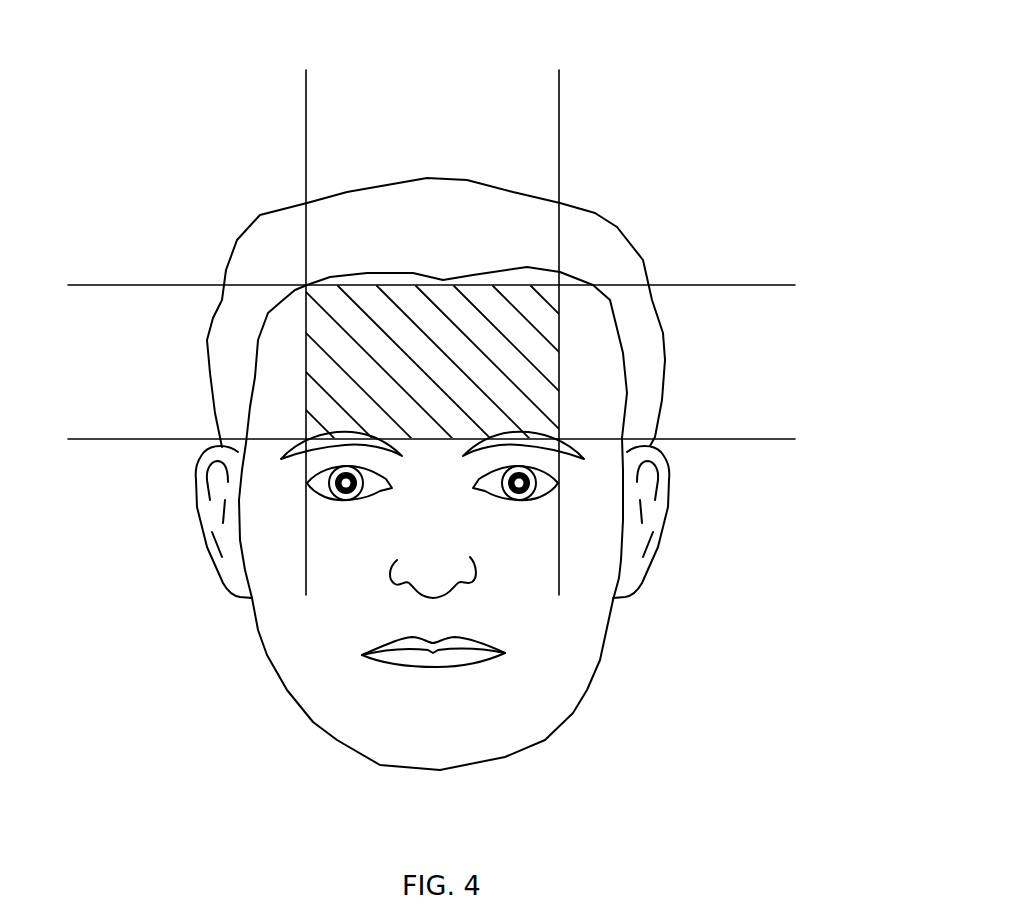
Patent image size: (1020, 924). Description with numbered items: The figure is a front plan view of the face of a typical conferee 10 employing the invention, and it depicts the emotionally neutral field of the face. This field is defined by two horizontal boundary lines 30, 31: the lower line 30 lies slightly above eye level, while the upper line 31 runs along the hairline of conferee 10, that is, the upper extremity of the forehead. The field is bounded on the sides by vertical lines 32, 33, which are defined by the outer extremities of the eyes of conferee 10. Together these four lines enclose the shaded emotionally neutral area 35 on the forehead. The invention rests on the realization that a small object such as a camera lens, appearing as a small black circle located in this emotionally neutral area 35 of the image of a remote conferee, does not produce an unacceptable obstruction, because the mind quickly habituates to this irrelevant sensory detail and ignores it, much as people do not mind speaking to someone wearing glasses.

The conferee 10 is at (297, 705).
The horizontal boundary line 30 is at (415, 444).
The horizontal boundary line 31 is at (415, 285).
The vertical line 32 is at (308, 346).
The vertical line 33 is at (561, 346).
The emotionally neutral area 35 is at (456, 387).